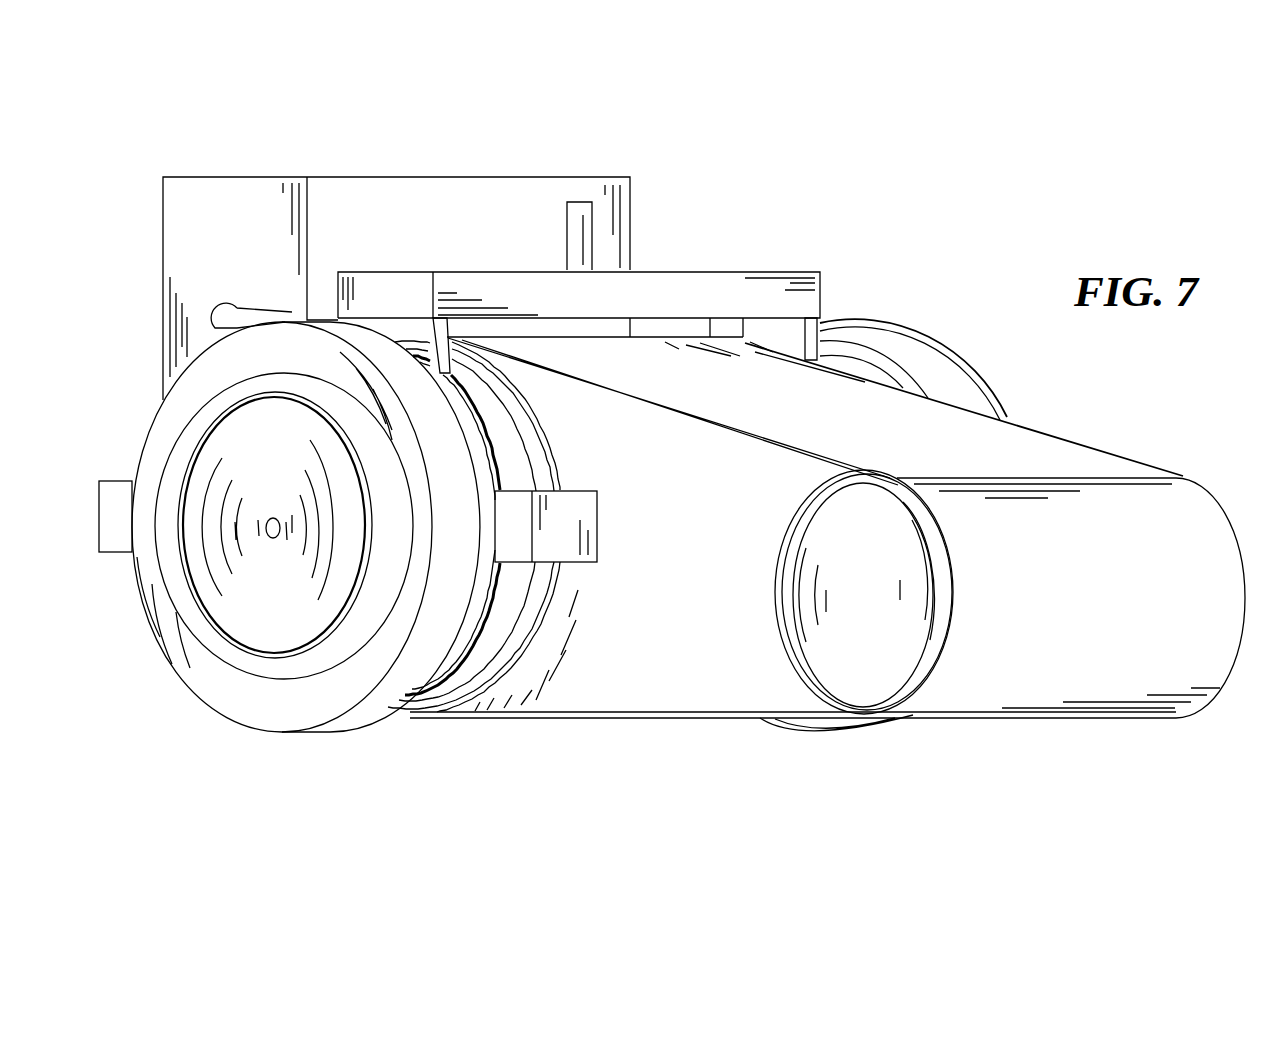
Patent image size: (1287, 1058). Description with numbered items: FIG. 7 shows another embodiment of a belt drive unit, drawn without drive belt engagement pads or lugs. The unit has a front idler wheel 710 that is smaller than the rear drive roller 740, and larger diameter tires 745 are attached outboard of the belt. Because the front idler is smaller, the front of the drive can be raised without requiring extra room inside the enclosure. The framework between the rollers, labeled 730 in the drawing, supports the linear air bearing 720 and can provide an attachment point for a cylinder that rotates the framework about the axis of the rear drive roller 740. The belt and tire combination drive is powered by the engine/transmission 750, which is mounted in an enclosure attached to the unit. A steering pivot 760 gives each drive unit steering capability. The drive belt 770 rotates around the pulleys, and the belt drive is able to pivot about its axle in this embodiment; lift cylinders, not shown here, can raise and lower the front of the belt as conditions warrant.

The front idler wheel 710 is at (888, 662).
The linear air bearing 720 is at (692, 713).
The frame body 730 is at (650, 630).
The rear drive roller 740 is at (510, 613).
The tires 745 is at (228, 700).
The engine/transmission 750 is at (263, 177).
The steering pivot 760 is at (577, 220).
The drive belt 770 is at (818, 417).